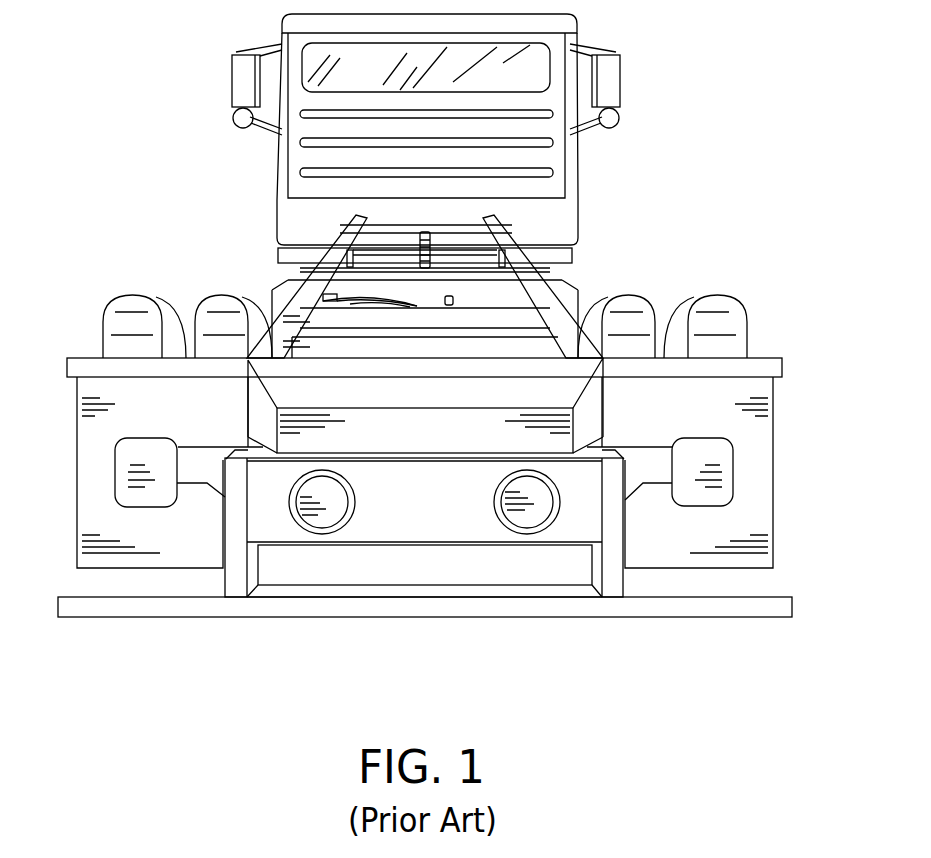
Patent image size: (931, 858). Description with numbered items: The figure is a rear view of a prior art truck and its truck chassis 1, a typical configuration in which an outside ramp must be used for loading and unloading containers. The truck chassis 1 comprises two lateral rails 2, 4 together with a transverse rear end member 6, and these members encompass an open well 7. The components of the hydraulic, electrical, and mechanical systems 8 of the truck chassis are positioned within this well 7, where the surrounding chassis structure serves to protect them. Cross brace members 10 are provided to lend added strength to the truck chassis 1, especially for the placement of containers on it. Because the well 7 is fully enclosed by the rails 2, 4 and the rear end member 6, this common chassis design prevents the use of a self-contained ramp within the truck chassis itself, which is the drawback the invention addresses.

The truck chassis 1 is at (505, 222).
The lateral rail 2 is at (293, 312).
The lateral rail 4 is at (547, 302).
The transverse rear end member 6 is at (530, 385).
The open well 7 is at (378, 292).
The hydraulic, electrical, and mechanical systems 8 is at (337, 292).
The cross brace member 10 is at (513, 270).